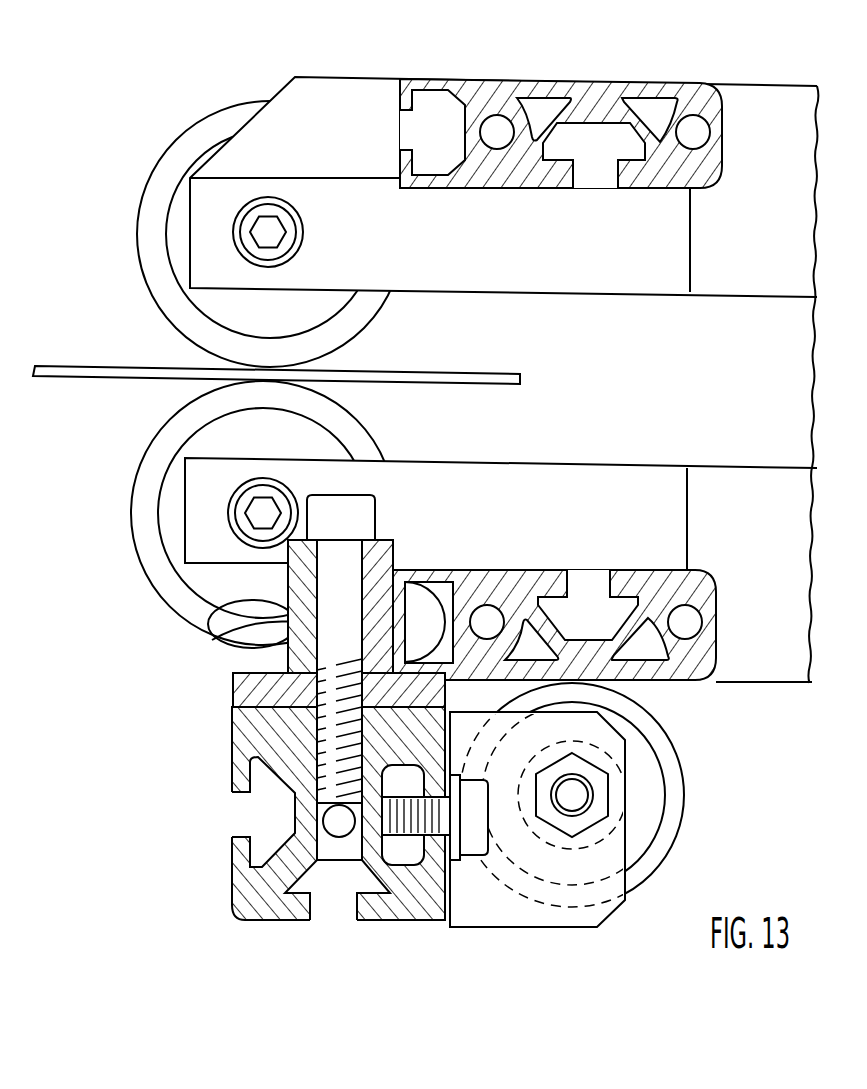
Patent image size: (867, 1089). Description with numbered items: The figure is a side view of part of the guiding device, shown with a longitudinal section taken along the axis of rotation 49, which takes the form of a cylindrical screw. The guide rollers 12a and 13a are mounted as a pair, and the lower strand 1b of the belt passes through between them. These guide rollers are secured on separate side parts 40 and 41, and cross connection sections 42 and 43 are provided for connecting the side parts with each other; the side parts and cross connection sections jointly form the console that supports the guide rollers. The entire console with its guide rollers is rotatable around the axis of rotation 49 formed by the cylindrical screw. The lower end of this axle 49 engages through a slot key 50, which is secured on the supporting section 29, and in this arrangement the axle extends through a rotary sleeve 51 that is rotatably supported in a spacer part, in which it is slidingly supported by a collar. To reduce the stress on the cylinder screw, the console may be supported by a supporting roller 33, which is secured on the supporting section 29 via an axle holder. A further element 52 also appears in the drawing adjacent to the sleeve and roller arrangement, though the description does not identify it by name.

The lower strand 1b is at (497, 372).
The guide roller 12a is at (152, 170).
The guide roller 13a is at (135, 483).
The supporting section 29 is at (233, 763).
The supporting roller 33 is at (683, 797).
The side part 40 is at (763, 86).
The side part 41 is at (627, 466).
The cross connection section 42 is at (642, 188).
The cross connection section 43 is at (637, 570).
The axis of rotation 49 is at (372, 547).
The slot key 50 is at (298, 740).
The rotary sleeve 51 is at (352, 565).
The spring ring 52 is at (262, 635).